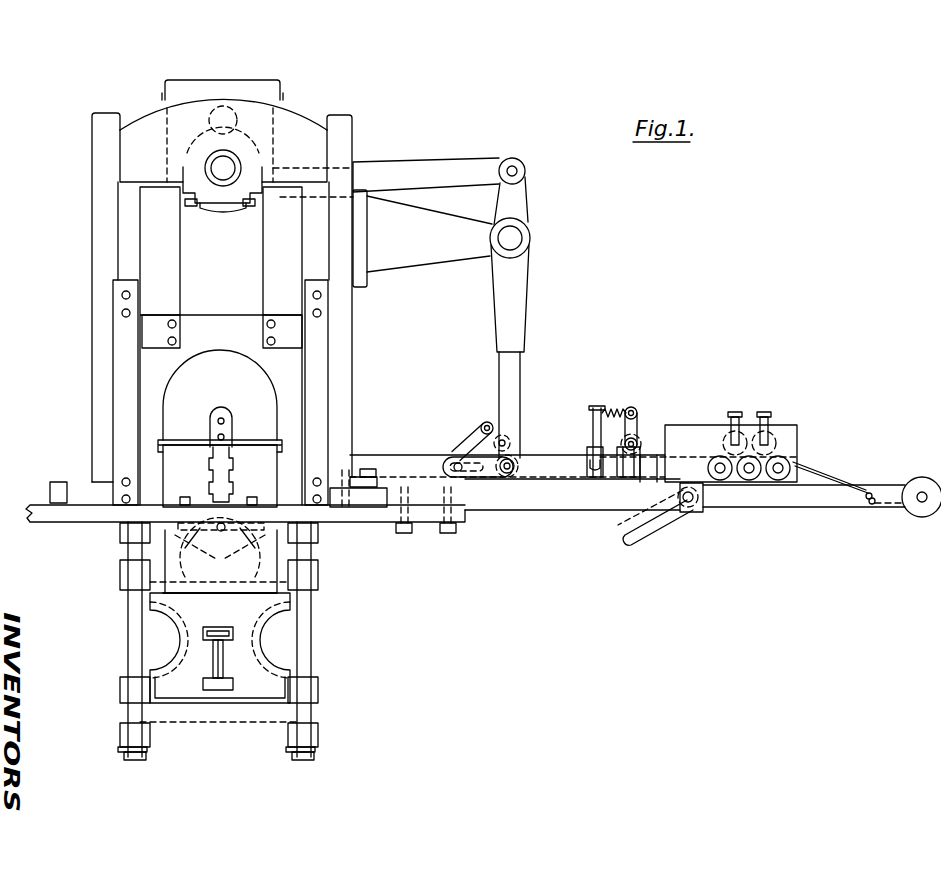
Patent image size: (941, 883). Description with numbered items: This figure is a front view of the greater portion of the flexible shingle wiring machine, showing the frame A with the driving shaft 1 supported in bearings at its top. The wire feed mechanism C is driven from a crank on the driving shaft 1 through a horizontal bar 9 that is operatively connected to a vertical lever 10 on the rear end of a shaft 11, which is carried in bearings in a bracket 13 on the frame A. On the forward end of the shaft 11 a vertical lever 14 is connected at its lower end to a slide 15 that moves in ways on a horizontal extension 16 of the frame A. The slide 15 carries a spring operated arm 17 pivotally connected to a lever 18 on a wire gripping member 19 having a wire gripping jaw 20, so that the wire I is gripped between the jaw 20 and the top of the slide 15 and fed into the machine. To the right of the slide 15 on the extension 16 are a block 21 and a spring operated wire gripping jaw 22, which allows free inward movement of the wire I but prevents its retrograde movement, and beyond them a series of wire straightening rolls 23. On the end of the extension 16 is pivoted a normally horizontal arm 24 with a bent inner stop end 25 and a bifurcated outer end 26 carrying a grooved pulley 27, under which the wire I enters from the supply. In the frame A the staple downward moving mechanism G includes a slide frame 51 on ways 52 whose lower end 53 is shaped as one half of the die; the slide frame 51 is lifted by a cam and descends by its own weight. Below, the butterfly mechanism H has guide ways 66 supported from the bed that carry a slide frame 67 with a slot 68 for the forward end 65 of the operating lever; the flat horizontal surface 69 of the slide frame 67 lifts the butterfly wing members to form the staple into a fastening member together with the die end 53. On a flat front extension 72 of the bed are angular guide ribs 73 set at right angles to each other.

The frame A is at (97, 305).
The driving shaft 1 is at (226, 165).
The horizontal bar 9 is at (438, 167).
The vertical lever 10 is at (525, 199).
The shaft 11 is at (531, 239).
The bracket 13 is at (422, 238).
The vertical lever 14 is at (503, 335).
The wire feed mechanism C is at (520, 385).
The slide 15 is at (493, 468).
The horizontal extension 16 is at (572, 505).
The spring operated arm 17 is at (468, 443).
The lever 18 is at (490, 421).
The wire gripping member 19 is at (497, 442).
The wire gripping jaw 20 is at (508, 447).
The block 21 is at (613, 468).
The spring operated wire gripping jaw 22 is at (622, 448).
The wire straightening rolls 23 is at (777, 440).
The normally horizontal arm 24 is at (805, 500).
The bent inner stop end 25 is at (655, 522).
The bifurcated outer end 26 is at (882, 490).
The grooved pulley 27 is at (927, 487).
The wire I is at (402, 455).
The slide frame 51 is at (266, 262).
The ways 52 is at (132, 378).
The lower end of slide frame 53 is at (243, 455).
The staple downward moving mechanism G is at (220, 488).
The butterfly mechanism H is at (218, 620).
The forward end of lever 65 is at (218, 655).
The guide ways 66 is at (132, 648).
The slide frame 67 is at (220, 607).
The slot 68 is at (205, 653).
The flat horizontal surface 69 is at (222, 540).
The flat front extension 72 is at (78, 514).
The angular guide ribs 73 is at (62, 500).